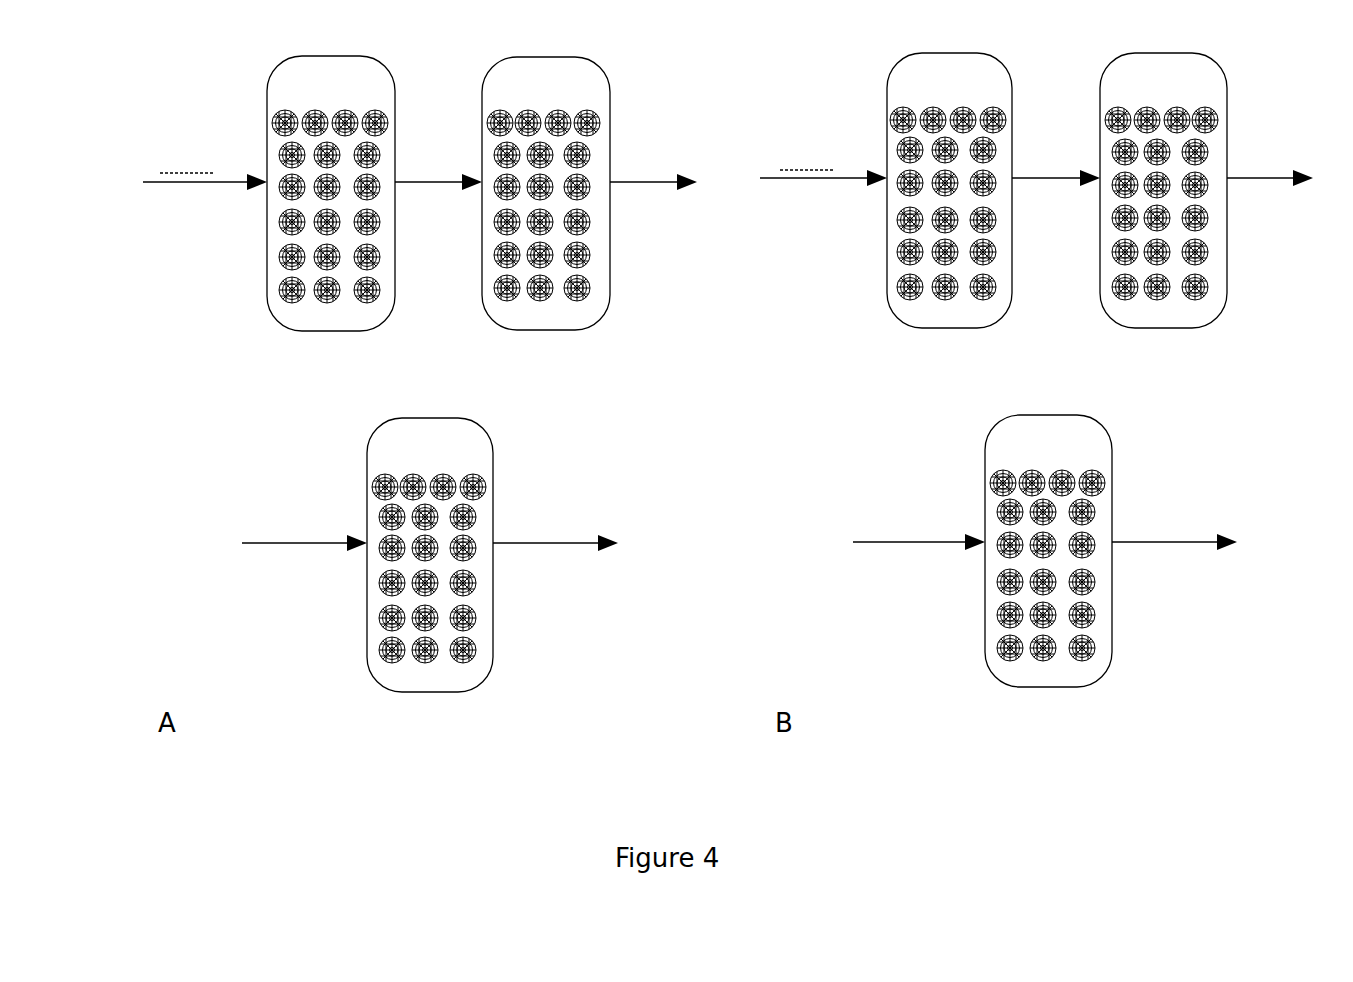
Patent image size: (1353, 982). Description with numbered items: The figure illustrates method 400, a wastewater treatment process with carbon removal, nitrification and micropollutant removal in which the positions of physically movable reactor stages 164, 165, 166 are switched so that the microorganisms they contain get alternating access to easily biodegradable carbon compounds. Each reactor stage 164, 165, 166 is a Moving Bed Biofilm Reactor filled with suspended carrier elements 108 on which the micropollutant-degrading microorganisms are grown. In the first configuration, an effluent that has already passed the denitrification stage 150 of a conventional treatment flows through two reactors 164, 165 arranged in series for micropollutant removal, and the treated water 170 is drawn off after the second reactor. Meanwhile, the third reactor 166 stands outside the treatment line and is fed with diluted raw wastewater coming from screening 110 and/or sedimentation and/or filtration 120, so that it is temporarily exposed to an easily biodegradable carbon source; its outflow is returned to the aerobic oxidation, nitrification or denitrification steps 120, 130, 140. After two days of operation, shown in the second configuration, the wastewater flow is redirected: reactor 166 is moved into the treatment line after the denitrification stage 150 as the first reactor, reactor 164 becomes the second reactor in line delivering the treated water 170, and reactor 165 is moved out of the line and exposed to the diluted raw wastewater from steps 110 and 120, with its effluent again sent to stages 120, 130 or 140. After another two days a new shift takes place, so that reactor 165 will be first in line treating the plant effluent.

In FIG. 4B, the suspended carrier elements 108 is at (1092, 483).
In FIG. 4A, the screening 110 is at (250, 543).
In FIG. 4B, the screening 110 is at (870, 542).
In FIG. 4A, the sedimentation and/or filtration 120 is at (595, 590).
In FIG. 4B, the sedimentation and/or filtration 120 is at (1213, 587).
In FIG. 4A, the biological oxidation under aerobic conditions 130 is at (595, 590).
In FIG. 4B, the biological oxidation under aerobic conditions 130 is at (1213, 587).
In FIG. 4A, the aerobic nitrification step 140 is at (625, 540).
In FIG. 4B, the aerobic nitrification step 140 is at (1244, 538).
In FIG. 4A, the anoxic denitrification stage 150 is at (152, 182).
In FIG. 4B, the anoxic denitrification stage 150 is at (770, 178).
In FIG. 4A, the reactor stage 164 is at (331, 193).
In FIG. 4B, the reactor stage 164 is at (1163, 190).
In FIG. 4A, the reactor stage 165 is at (546, 193).
In FIG. 4B, the reactor stage 165 is at (1105, 551).
In FIG. 4A, the reactor stage 166 is at (430, 555).
In FIG. 4B, the reactor stage 166 is at (949, 190).
In FIG. 4A, the treated water 170 is at (703, 182).
In FIG. 4B, the treated water 170 is at (1323, 178).
In FIG. 4A, the method 400 is at (560, 743).